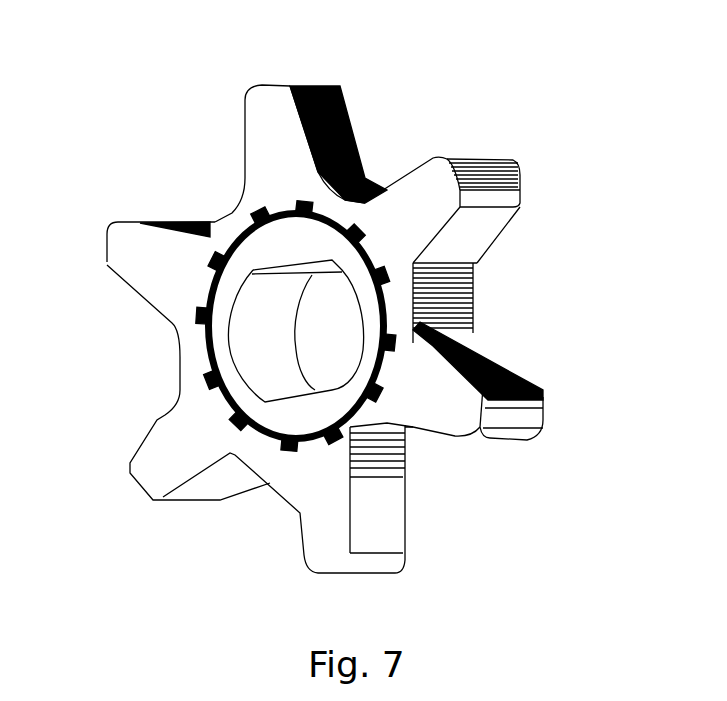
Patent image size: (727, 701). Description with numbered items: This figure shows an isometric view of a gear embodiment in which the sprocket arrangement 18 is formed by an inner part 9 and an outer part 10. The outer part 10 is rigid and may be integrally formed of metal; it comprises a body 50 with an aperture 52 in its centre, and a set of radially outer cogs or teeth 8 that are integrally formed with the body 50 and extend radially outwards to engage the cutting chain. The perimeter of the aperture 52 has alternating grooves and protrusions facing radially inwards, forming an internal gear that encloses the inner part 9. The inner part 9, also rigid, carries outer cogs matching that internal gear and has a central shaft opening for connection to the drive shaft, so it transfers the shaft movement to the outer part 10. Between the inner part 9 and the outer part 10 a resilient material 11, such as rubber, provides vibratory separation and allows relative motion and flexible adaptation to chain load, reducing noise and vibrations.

The radially outer cogs or teeth 8 is at (263, 92).
The inner part 9 is at (277, 413).
The outer part 10 is at (262, 168).
The resilient material 11 is at (193, 318).
The sprocket arrangement 18 is at (142, 377).
The body 50 is at (234, 207).
The aperture 52 is at (386, 342).